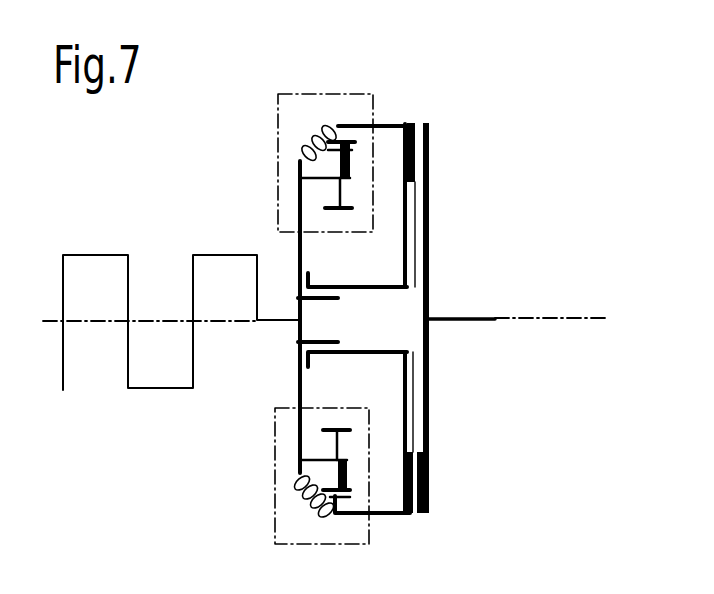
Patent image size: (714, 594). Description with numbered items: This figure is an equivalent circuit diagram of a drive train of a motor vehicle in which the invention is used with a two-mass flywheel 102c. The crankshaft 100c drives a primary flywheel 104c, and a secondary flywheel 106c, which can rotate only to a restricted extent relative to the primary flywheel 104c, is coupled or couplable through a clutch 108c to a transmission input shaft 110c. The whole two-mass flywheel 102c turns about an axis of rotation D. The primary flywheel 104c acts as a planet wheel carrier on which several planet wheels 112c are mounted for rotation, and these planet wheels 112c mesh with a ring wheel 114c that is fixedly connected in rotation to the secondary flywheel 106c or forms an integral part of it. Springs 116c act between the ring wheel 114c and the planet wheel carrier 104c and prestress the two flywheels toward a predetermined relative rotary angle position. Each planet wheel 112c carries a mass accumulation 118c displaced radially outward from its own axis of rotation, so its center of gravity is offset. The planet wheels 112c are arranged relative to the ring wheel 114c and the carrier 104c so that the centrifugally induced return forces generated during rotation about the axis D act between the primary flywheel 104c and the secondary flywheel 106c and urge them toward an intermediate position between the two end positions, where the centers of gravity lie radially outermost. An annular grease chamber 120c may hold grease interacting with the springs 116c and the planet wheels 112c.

The crankshaft 100c is at (108, 253).
The two-mass flywheel 102c is at (468, 88).
The primary flywheel 104c is at (300, 215).
The secondary flywheel 106c is at (407, 250).
The clutch 108c is at (352, 164).
The transmission input shaft 110c is at (470, 319).
The planet wheels 112c is at (337, 193).
The ring wheel 114c is at (357, 118).
The springs 116c is at (300, 132).
The mass accumulation 118c is at (431, 135).
The annular grease chamber 120c is at (375, 94).
The axis of rotation D is at (537, 316).